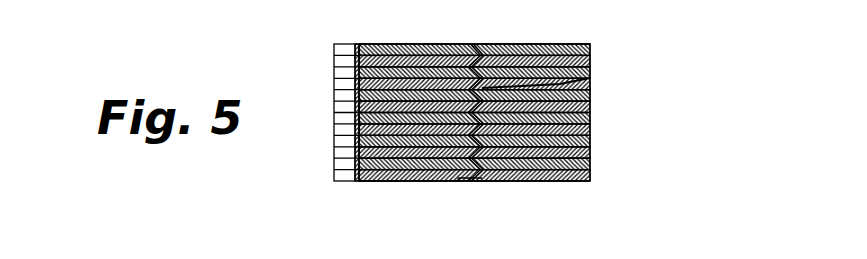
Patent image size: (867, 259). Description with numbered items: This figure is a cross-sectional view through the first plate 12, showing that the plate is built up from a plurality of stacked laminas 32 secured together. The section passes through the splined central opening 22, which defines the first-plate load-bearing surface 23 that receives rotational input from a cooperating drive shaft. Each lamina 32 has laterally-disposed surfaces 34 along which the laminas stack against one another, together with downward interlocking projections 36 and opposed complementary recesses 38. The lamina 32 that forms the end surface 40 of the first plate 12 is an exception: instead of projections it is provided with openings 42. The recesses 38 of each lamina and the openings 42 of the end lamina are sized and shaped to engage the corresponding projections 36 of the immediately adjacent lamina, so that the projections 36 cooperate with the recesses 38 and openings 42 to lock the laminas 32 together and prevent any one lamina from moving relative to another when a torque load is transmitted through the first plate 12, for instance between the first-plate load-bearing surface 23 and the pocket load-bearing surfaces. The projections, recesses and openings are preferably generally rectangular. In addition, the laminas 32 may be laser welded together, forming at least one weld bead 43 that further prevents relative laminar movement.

The first plate 12 is at (320, 72).
The splined central opening 22 is at (590, 131).
The first-plate load-bearing surface 23 is at (592, 163).
The laminas 32 is at (538, 45).
The laterally-disposed surfaces 34 is at (592, 50).
The interlocking projections 36 is at (590, 78).
The recesses 38 is at (472, 45).
The end surface 40 is at (374, 185).
The openings 42 is at (469, 183).
The weld bead 43 is at (357, 126).